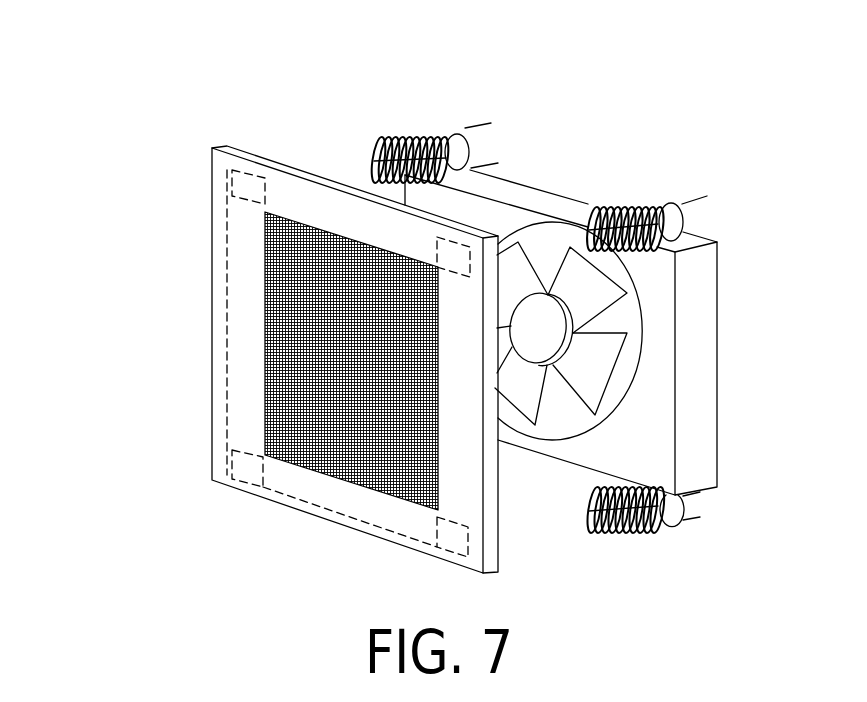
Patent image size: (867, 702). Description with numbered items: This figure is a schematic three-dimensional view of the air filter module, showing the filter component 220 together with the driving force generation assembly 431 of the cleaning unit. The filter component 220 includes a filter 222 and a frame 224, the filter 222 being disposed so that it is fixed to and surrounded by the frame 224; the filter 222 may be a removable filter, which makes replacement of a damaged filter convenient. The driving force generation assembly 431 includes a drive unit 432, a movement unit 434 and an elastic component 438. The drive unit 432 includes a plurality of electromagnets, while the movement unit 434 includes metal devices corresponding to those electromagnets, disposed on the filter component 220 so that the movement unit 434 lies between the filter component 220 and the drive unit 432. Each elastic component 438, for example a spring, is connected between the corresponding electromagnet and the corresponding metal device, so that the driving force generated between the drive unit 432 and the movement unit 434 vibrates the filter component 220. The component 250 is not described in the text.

The filter component 220 is at (130, 402).
The filter 222 is at (316, 405).
The frame 224 is at (215, 421).
The fan housing 250 is at (702, 372).
The driving force generation assembly 431 is at (524, 69).
The drive unit 432 is at (491, 119).
The movement unit 434 is at (265, 179).
The elastic component 438 is at (394, 137).